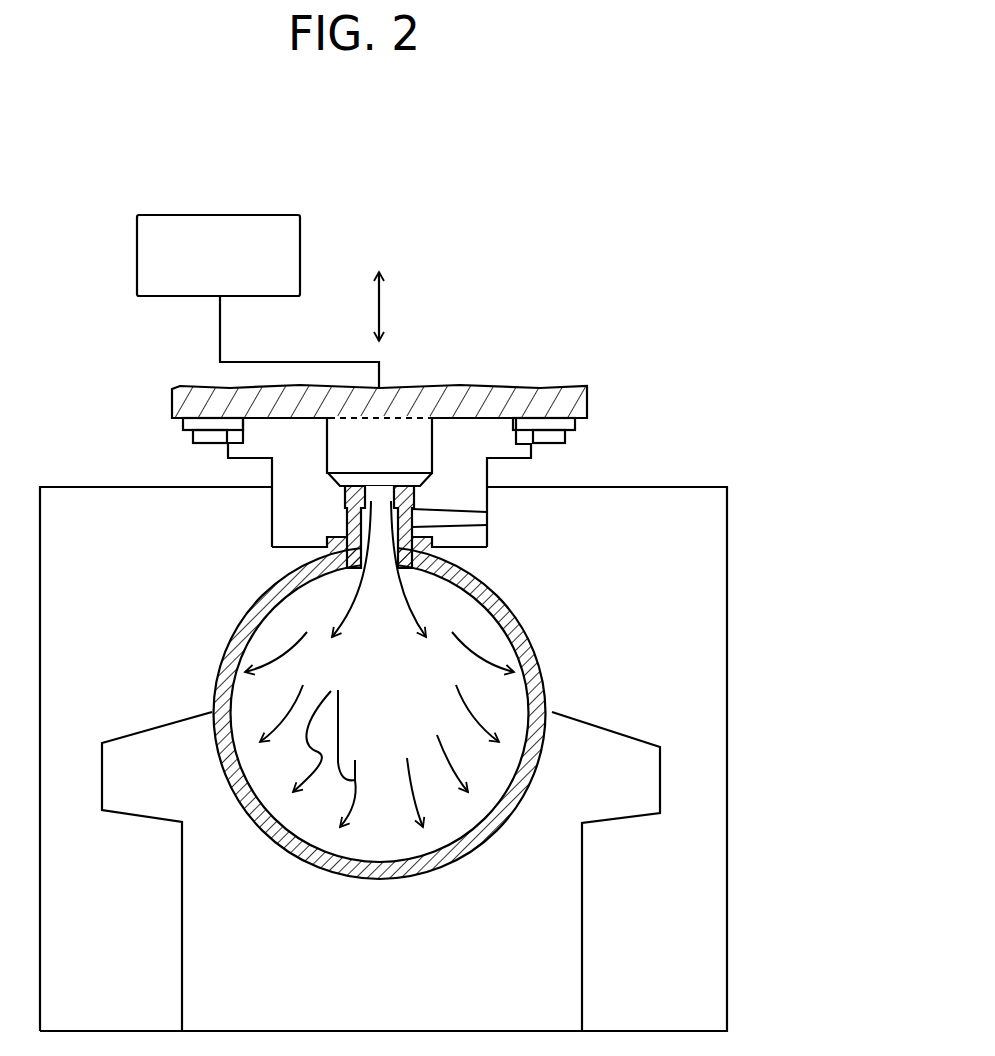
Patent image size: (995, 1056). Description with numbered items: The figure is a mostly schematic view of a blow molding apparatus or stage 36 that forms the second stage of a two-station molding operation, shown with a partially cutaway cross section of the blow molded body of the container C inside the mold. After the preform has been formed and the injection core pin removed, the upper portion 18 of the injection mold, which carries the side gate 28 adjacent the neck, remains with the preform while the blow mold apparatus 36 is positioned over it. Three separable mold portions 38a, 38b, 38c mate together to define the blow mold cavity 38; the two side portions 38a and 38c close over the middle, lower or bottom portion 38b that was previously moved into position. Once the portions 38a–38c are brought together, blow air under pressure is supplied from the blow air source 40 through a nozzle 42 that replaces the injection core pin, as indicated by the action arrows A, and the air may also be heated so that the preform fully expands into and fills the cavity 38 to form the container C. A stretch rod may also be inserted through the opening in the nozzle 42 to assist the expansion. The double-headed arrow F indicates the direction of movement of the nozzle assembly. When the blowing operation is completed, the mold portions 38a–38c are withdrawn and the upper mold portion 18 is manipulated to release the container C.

The upper portion of the injection mold 18 is at (467, 437).
The gate 28 is at (487, 517).
The blow molding apparatus 36 is at (643, 413).
The blow mold cavity 38 is at (397, 729).
The side mold portion 38a is at (159, 582).
The bottom mold portion 38b is at (413, 960).
The side mold portion 38c is at (677, 930).
The blow air source 40 is at (137, 239).
The nozzle 42 is at (395, 442).
The action arrows A is at (379, 664).
The container C is at (537, 643).
The direction of movement F is at (382, 300).